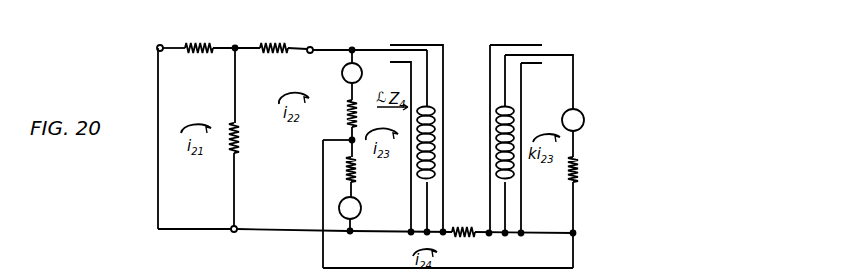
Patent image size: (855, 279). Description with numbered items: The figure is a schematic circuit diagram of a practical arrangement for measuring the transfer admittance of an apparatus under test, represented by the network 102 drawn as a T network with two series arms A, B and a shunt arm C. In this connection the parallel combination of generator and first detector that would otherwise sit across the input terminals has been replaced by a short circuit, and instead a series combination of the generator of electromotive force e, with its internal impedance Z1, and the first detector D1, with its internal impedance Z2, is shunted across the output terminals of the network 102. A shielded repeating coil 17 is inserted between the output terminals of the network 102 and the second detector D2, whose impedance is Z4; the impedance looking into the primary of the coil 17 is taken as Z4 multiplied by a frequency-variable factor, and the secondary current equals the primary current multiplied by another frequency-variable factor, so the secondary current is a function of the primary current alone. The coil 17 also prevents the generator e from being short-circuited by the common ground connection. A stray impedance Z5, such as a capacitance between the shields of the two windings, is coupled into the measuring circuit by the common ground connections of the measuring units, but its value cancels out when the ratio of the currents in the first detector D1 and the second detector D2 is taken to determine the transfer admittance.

The network under test 102 is at (265, 23).
The repeating coil 17 is at (450, 100).
The series arm A is at (199, 35).
The series arm B is at (274, 35).
The shunt arm C is at (243, 138).
The first detector D1 is at (352, 73).
The second detector D2 is at (573, 120).
The internal impedance of the generator Z1 is at (358, 168).
The internal impedance of the first detector Z2 is at (339, 114).
The impedance of the second detector Z4 is at (580, 160).
The stray impedance Z5 is at (464, 245).
The generator of electromotive force e is at (350, 208).